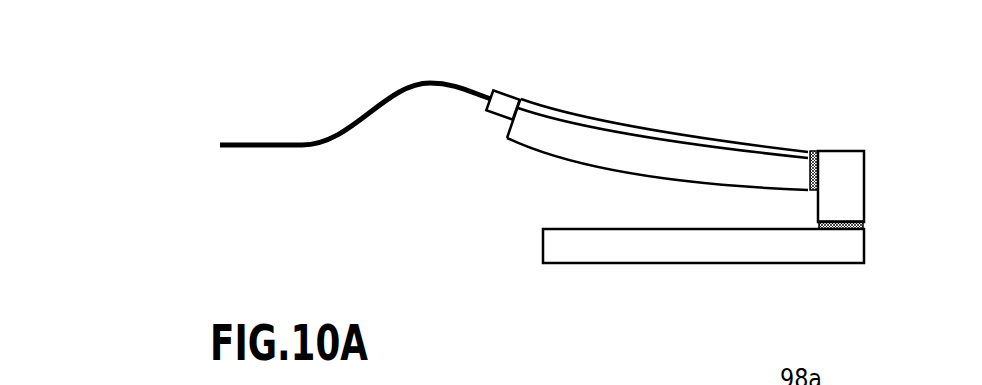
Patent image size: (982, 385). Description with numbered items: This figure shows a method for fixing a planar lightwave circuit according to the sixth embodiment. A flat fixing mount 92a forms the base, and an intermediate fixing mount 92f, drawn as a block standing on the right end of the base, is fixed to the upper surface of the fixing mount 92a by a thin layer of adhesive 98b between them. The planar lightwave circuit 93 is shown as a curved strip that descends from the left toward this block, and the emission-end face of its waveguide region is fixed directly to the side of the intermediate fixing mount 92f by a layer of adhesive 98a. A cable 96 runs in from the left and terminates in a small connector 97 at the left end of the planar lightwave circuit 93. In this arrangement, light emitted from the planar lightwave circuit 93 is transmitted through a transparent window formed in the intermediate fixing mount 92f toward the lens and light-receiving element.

The cable 96 is at (287, 142).
The connector 97 is at (513, 90).
The planar lightwave circuit 93 is at (650, 181).
The adhesive 98a is at (817, 150).
The intermediate fixing mount 92f is at (865, 183).
The adhesive 98b is at (865, 225).
The fixing mount 92a is at (560, 246).